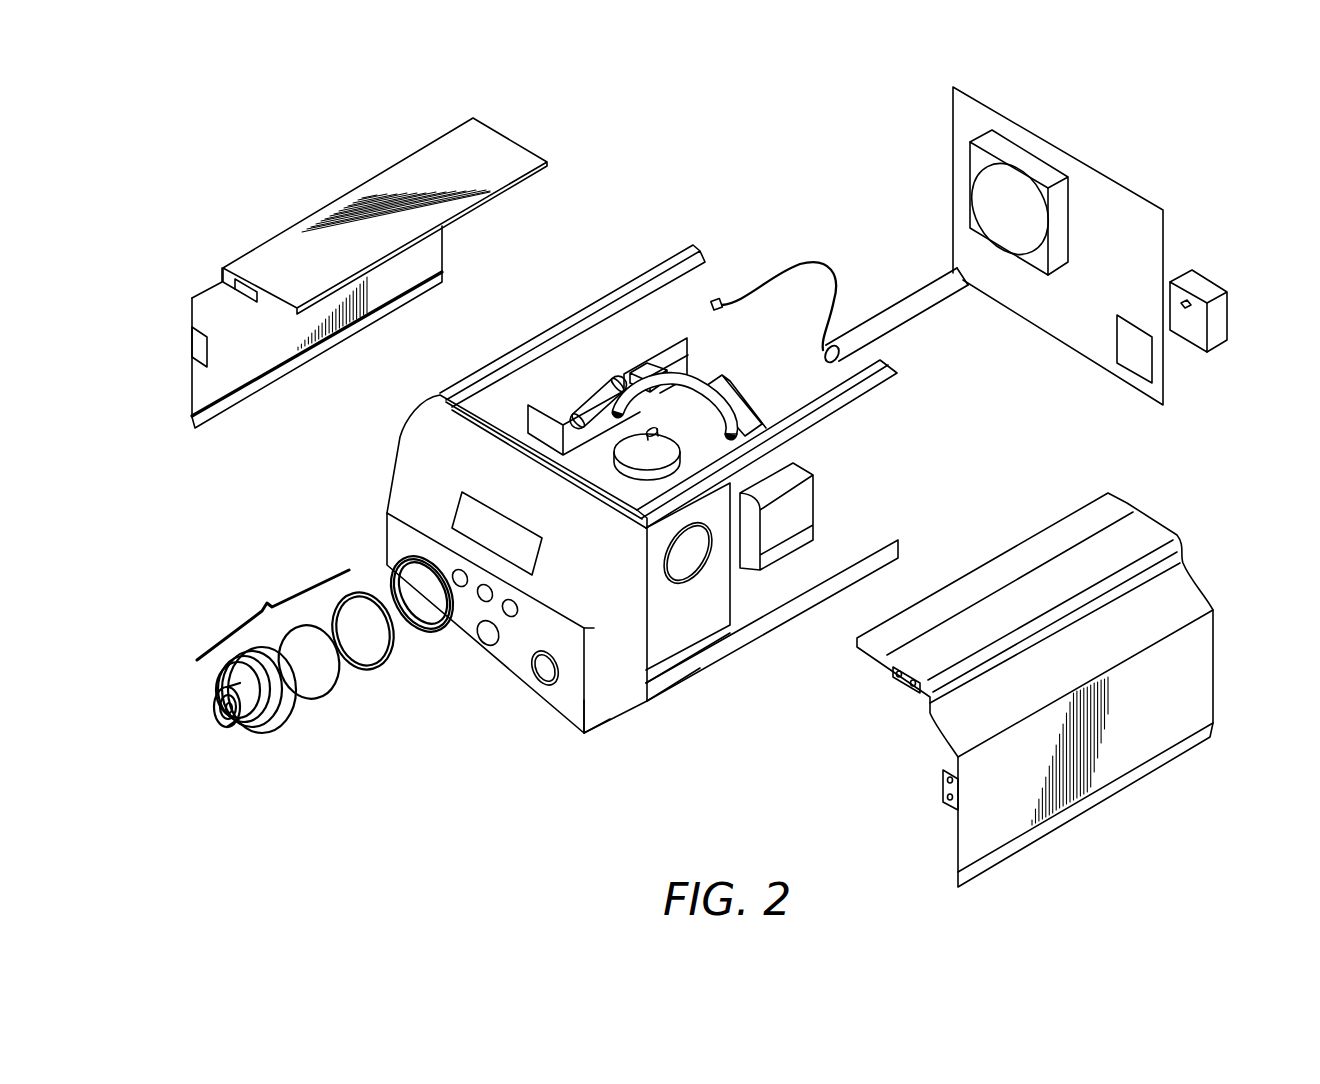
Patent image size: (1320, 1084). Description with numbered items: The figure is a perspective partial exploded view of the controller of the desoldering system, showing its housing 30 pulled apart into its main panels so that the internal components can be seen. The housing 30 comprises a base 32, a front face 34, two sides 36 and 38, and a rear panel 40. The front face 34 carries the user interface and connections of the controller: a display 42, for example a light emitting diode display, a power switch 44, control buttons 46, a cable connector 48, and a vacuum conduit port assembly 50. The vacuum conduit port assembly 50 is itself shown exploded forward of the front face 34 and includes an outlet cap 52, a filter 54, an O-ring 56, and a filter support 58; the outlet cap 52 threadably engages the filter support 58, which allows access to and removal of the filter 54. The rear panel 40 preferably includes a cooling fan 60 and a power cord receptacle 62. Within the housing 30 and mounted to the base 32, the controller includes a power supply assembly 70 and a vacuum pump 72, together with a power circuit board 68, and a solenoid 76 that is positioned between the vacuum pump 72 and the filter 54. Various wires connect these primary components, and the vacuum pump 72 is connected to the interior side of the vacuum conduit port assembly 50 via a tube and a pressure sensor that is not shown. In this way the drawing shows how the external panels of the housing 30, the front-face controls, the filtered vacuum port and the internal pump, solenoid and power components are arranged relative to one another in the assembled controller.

The housing 30 is at (389, 438).
The base 32 is at (657, 690).
The front face 34 is at (578, 708).
The side 36 is at (1183, 665).
The side 38 is at (192, 384).
The rear panel 40 is at (1077, 337).
The display 42 is at (468, 507).
The power switch 44 is at (542, 672).
The control buttons 46 is at (462, 582).
The cable connector 48 is at (508, 612).
The vacuum conduit port assembly 50 is at (273, 615).
The outlet cap 52 is at (280, 740).
The filter 54 is at (313, 700).
The O-ring 56 is at (365, 670).
The filter support 58 is at (439, 640).
The cooling fan 60 is at (1037, 168).
The power cord receptacle 62 is at (1216, 329).
The power circuit board 68 is at (680, 358).
The power supply assembly 70 is at (745, 408).
The vacuum pump 72 is at (680, 460).
The solenoid 76 is at (575, 400).